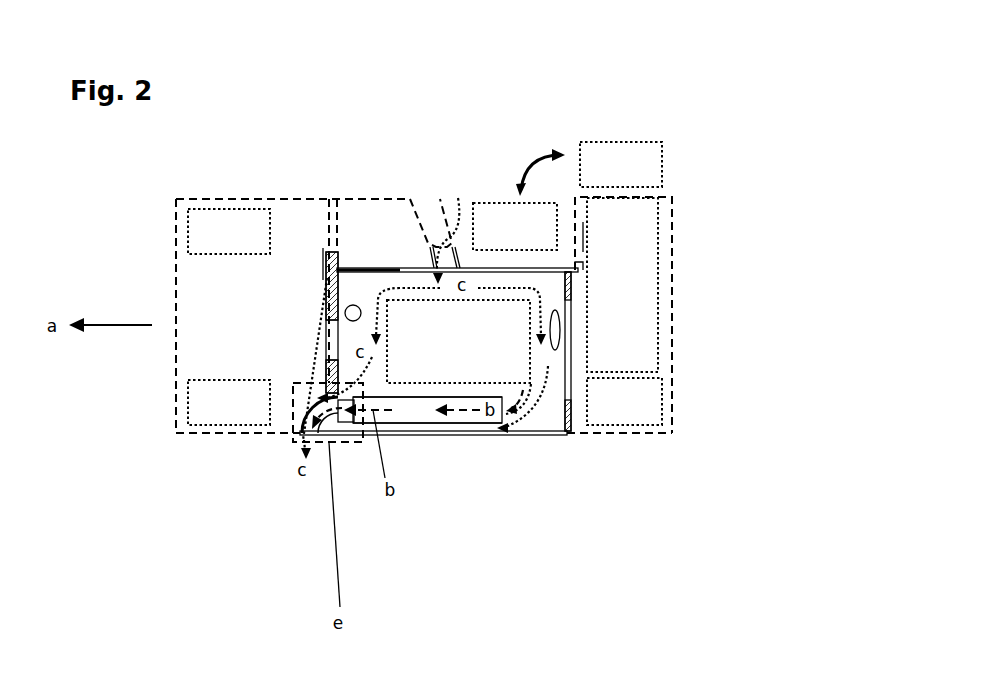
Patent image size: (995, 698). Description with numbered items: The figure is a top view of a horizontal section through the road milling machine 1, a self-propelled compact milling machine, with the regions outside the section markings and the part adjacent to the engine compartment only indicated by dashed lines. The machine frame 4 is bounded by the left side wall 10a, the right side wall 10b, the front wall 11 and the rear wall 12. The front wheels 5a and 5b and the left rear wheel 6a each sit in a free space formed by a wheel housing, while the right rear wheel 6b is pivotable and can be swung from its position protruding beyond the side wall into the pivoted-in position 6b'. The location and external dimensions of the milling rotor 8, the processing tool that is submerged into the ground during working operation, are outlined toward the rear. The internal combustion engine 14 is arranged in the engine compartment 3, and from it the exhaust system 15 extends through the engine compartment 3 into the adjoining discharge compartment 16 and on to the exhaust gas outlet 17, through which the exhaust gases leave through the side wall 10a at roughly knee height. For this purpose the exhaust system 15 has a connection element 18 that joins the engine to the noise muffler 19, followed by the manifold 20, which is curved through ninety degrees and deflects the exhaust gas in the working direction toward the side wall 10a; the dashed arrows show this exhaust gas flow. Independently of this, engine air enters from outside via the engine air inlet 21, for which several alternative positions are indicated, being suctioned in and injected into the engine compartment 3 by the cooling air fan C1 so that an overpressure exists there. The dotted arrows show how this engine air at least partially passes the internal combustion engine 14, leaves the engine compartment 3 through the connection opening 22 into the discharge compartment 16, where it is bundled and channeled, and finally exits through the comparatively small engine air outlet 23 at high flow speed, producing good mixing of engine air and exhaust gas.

The road milling machine 1 is at (636, 63).
The engine compartment 3 is at (410, 388).
The machine frame 4 is at (541, 434).
The front wheel 5a is at (233, 406).
The front wheel 5b is at (235, 218).
The rear wheel 6a is at (647, 417).
The rear wheel 6b is at (684, 118).
The pivoted-in position 6b' is at (517, 181).
The milling rotor 8 is at (647, 243).
The side wall 10a is at (563, 434).
The side wall 10b is at (340, 197).
The front wall 11 is at (173, 300).
The rear wall 12 is at (673, 313).
The internal combustion engine 14 is at (503, 358).
The exhaust system 15 is at (447, 420).
The discharge compartment 16 is at (314, 358).
The exhaust gas outlet 17 is at (315, 436).
The connection element 18 is at (521, 412).
The noise muffler 19 is at (400, 408).
The manifold 20 is at (313, 410).
The engine air inlet 21 is at (432, 265).
The connection opening 22 is at (329, 335).
The engine air outlet 23 is at (310, 425).
The cooling air fan C1 is at (423, 220).